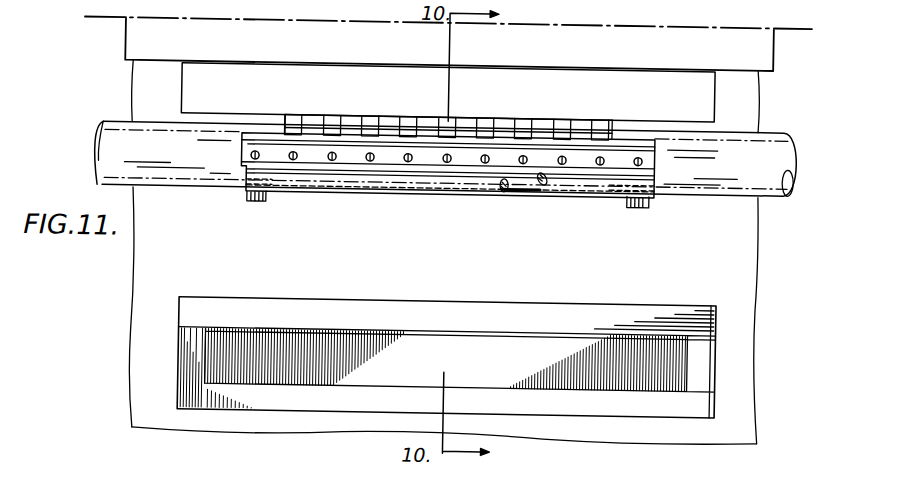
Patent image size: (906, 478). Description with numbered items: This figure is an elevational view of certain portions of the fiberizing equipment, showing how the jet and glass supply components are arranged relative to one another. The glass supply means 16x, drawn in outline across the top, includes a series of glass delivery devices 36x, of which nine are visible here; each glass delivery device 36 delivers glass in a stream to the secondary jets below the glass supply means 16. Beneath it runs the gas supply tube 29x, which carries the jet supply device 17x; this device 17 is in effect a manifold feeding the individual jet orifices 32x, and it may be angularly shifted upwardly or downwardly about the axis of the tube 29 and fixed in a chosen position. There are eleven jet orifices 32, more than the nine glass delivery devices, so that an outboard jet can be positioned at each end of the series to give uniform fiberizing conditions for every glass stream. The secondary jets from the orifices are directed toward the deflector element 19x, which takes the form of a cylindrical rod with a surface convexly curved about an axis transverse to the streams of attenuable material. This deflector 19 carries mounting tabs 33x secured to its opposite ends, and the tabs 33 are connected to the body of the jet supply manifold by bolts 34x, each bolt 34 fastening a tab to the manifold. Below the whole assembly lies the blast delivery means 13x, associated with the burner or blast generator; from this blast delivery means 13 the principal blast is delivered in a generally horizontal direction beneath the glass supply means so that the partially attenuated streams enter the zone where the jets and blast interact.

The glass supply means 16x is at (116, 37).
The jet supply device 17x is at (242, 135).
The deflector element 19x is at (435, 189).
The glass delivery devices 36x is at (335, 123).
The jet orifices 32x is at (295, 153).
The mounting tabs 33x is at (271, 185).
The bolts 34x is at (251, 197).
The gas supply tube 29x is at (796, 185).
The blast delivery means 13x is at (386, 300).
The support flange 16 is at (420, 44).
The mounting rail 17 is at (335, 107).
The carrier block 19 is at (447, 188).
The tabs 36 is at (467, 102).
The rivets 32 is at (434, 191).
The clip plates 33 is at (449, 212).
The end clips 34 is at (453, 220).
The tube 29 is at (466, 181).
The panel 13 is at (447, 333).